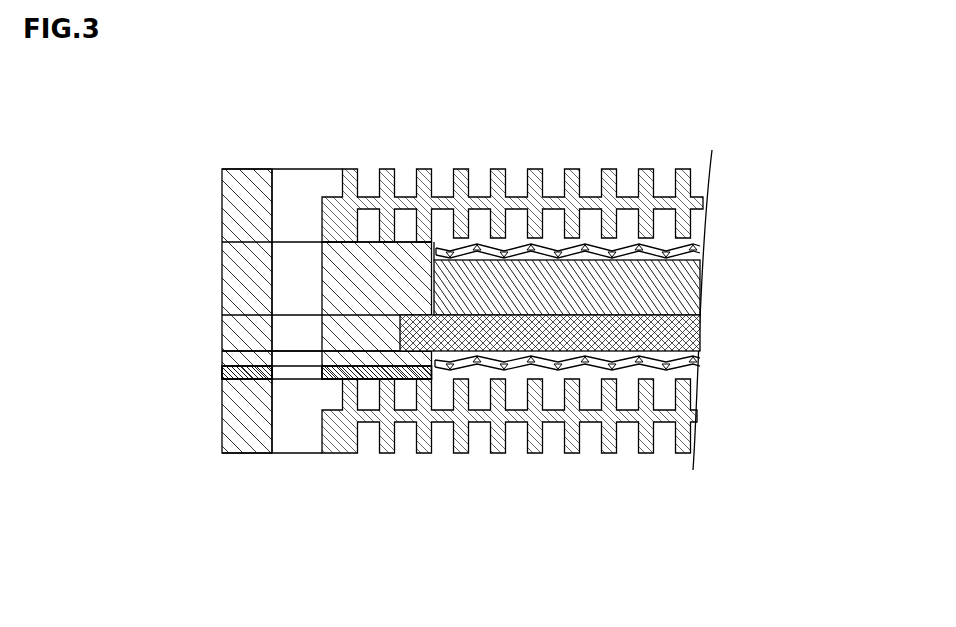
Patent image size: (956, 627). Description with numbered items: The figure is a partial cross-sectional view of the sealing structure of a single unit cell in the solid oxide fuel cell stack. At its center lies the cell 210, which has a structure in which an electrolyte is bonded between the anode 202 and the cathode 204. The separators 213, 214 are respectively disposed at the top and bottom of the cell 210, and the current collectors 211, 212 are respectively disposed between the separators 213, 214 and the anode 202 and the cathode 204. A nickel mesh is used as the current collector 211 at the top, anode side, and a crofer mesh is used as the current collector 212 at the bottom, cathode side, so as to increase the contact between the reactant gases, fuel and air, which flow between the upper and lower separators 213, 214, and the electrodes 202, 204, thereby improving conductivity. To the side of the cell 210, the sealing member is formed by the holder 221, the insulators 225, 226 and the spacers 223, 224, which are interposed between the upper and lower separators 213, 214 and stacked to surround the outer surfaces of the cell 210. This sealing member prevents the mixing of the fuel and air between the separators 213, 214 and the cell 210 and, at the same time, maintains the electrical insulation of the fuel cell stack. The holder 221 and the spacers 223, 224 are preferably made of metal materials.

The anode 202 is at (682, 290).
The cathode 204 is at (682, 327).
The cell 210 is at (636, 296).
The current collector 211 is at (697, 243).
The current collector 212 is at (702, 358).
The separator 213 is at (643, 177).
The separator 214 is at (642, 452).
The holder 221 is at (223, 277).
The spacer 223 is at (222, 373).
The spacer 224 is at (222, 373).
The insulator 225 is at (223, 335).
The insulator 226 is at (222, 362).